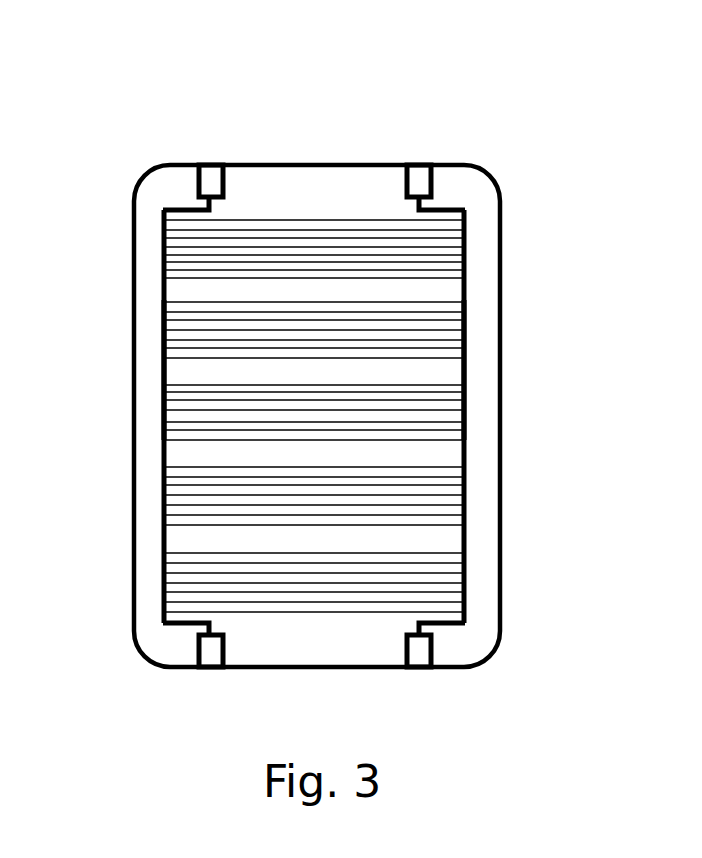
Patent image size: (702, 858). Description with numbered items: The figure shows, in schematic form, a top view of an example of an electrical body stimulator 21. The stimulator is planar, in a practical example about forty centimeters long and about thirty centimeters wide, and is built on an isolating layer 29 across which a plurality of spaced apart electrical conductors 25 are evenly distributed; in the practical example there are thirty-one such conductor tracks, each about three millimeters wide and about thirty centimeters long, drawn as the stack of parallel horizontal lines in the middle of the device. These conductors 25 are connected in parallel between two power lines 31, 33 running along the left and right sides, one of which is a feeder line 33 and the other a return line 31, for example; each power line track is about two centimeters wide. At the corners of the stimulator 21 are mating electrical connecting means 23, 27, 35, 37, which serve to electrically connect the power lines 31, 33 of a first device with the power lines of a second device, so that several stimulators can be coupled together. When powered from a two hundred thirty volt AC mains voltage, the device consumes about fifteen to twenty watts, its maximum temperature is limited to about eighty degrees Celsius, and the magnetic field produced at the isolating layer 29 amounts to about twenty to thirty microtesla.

The electrical body stimulator 21 is at (156, 105).
The mating electrical connecting means 23 is at (211, 190).
The electrical conductors 25 is at (325, 236).
The mating electrical connecting means 27 is at (419, 190).
The isolating layer 29 is at (487, 208).
The return line 31 is at (466, 369).
The feeder line 33 is at (162, 372).
The mating electrical connecting means 35 is at (419, 648).
The mating electrical connecting means 37 is at (211, 648).